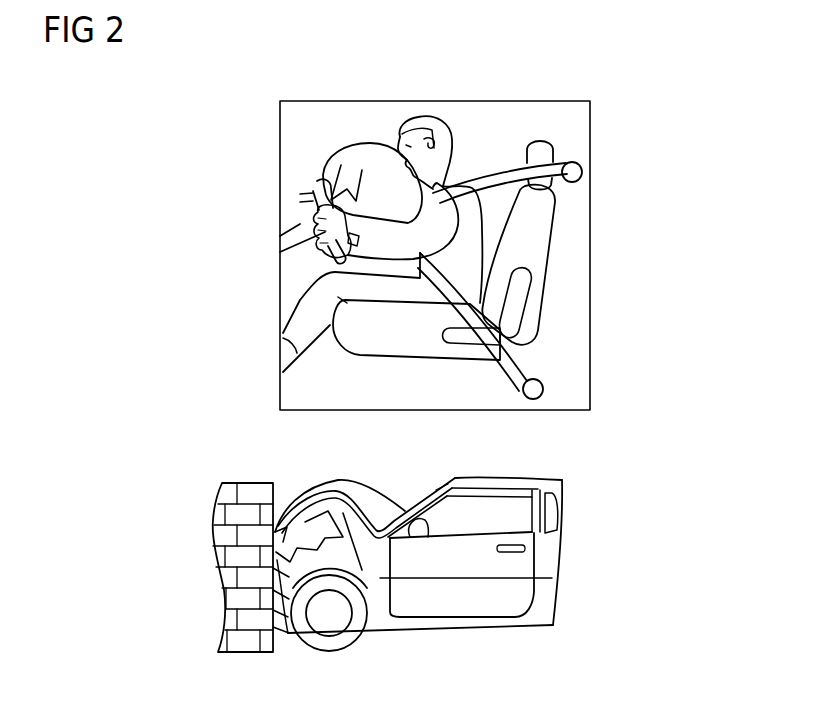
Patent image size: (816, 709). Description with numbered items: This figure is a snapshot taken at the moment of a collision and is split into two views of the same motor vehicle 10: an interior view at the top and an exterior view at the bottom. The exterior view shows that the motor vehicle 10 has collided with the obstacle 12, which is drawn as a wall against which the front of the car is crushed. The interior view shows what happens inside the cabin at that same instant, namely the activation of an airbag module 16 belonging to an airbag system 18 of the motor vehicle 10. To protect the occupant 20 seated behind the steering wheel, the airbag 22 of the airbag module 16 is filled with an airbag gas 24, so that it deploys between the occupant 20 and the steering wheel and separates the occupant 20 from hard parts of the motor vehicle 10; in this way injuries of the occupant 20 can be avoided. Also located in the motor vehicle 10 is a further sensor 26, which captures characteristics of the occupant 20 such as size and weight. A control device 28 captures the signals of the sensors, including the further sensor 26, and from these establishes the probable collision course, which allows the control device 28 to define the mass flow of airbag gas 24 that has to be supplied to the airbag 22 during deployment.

The motor vehicle 10 is at (606, 520).
The obstacle 12 is at (230, 552).
The airbag module 16 is at (260, 146).
The airbag system 18 is at (236, 238).
The occupant 20 is at (440, 122).
The airbag 22 is at (350, 160).
The airbag gas 24 is at (371, 186).
The further sensor 26 is at (355, 327).
The control device 28 is at (300, 198).